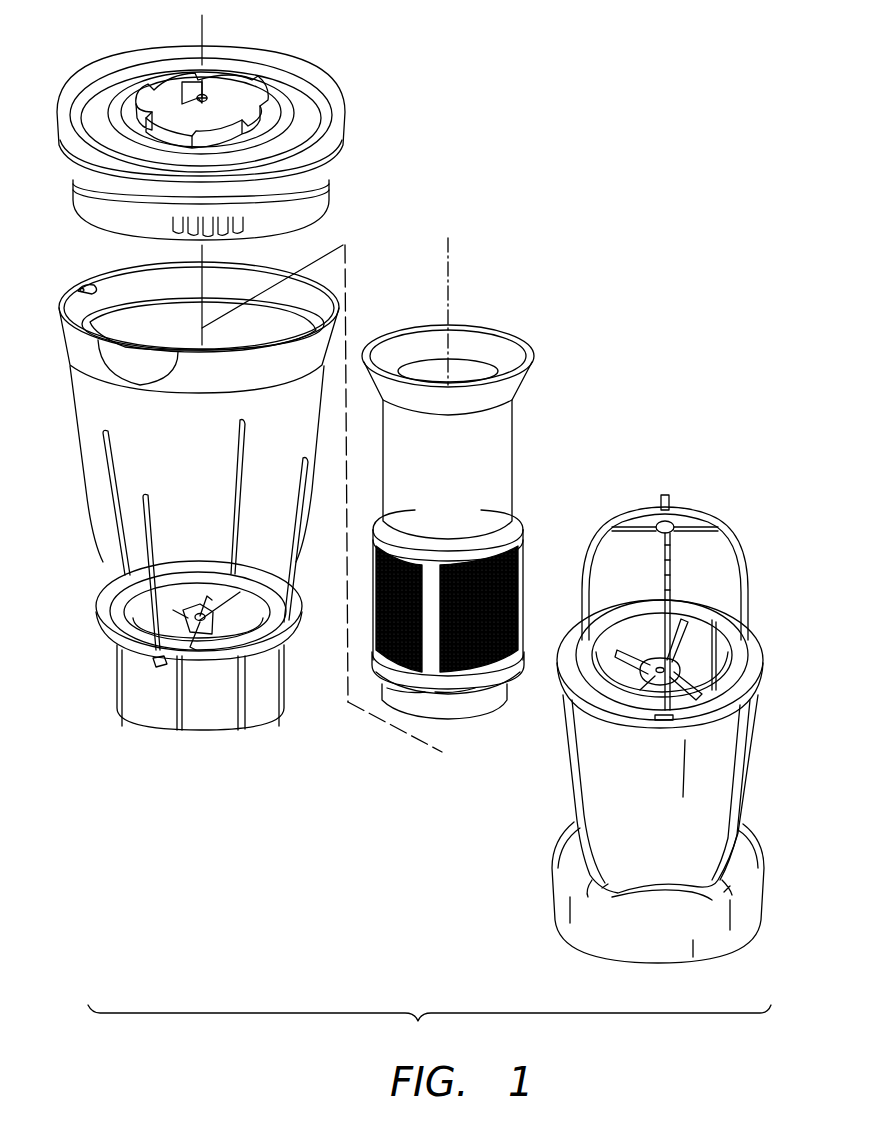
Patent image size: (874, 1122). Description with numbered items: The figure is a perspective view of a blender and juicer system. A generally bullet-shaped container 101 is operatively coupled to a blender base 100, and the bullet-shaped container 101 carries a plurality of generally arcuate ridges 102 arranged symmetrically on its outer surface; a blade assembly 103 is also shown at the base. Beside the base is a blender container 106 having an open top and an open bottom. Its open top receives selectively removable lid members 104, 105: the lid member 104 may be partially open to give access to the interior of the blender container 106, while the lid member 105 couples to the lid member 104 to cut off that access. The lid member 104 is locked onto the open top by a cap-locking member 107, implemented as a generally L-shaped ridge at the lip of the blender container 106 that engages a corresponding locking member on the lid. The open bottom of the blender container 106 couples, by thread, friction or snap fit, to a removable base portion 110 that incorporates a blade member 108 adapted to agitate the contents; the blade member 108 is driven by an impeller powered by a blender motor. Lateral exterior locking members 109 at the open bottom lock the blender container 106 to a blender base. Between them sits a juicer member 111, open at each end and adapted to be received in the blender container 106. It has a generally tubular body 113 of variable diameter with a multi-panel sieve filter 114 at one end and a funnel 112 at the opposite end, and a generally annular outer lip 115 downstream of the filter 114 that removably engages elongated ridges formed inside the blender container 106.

The blender base 100 is at (730, 757).
The bullet-shaped container 101 is at (705, 585).
The arcuate ridges 102 is at (650, 508).
The blade assembly 103 is at (683, 645).
The lid member 104 is at (201, 132).
The lid member 105 is at (240, 92).
The blender container 106 is at (178, 484).
The cap-locking member 107 is at (87, 285).
The blade member 108 is at (177, 610).
The locking members 109 is at (153, 662).
The removable base portion 110 is at (163, 703).
The juicer member 111 is at (469, 509).
The funnel 112 is at (490, 355).
The tubular body 113 is at (483, 433).
The multi-panel sieve filter 114 is at (376, 578).
The annular outer lip 115 is at (386, 683).